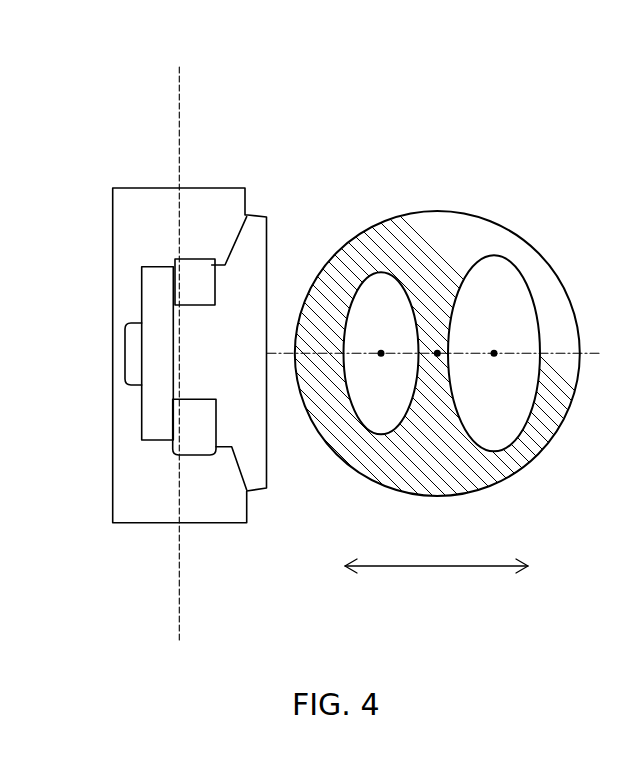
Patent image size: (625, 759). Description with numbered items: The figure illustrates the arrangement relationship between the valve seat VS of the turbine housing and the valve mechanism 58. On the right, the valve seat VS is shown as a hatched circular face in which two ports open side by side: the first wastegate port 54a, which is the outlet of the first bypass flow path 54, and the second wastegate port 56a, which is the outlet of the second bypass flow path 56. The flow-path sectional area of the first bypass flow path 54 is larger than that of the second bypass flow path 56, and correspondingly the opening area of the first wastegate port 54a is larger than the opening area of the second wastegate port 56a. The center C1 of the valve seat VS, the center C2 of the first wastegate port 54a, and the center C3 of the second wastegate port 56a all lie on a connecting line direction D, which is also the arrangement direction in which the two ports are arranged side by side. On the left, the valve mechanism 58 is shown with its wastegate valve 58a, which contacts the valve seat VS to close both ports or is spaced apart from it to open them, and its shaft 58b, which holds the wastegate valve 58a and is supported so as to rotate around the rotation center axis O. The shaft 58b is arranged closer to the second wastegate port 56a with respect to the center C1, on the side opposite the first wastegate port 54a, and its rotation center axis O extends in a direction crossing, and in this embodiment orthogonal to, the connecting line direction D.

The valve mechanism 58 is at (142, 273).
The wastegate valve 58a is at (125, 352).
The shaft 58b is at (112, 245).
The rotation center axis O is at (179, 153).
The valve seat VS is at (382, 482).
The first bypass flow path 54 is at (494, 321).
The first wastegate port 54a is at (496, 255).
The second bypass flow path 56 is at (381, 312).
The second wastegate port 56a is at (382, 272).
The center of the valve seat C1 is at (437, 350).
The center of the first wastegate port C2 is at (494, 351).
The center of the second wastegate port C3 is at (381, 351).
The connecting line direction D is at (436, 583).